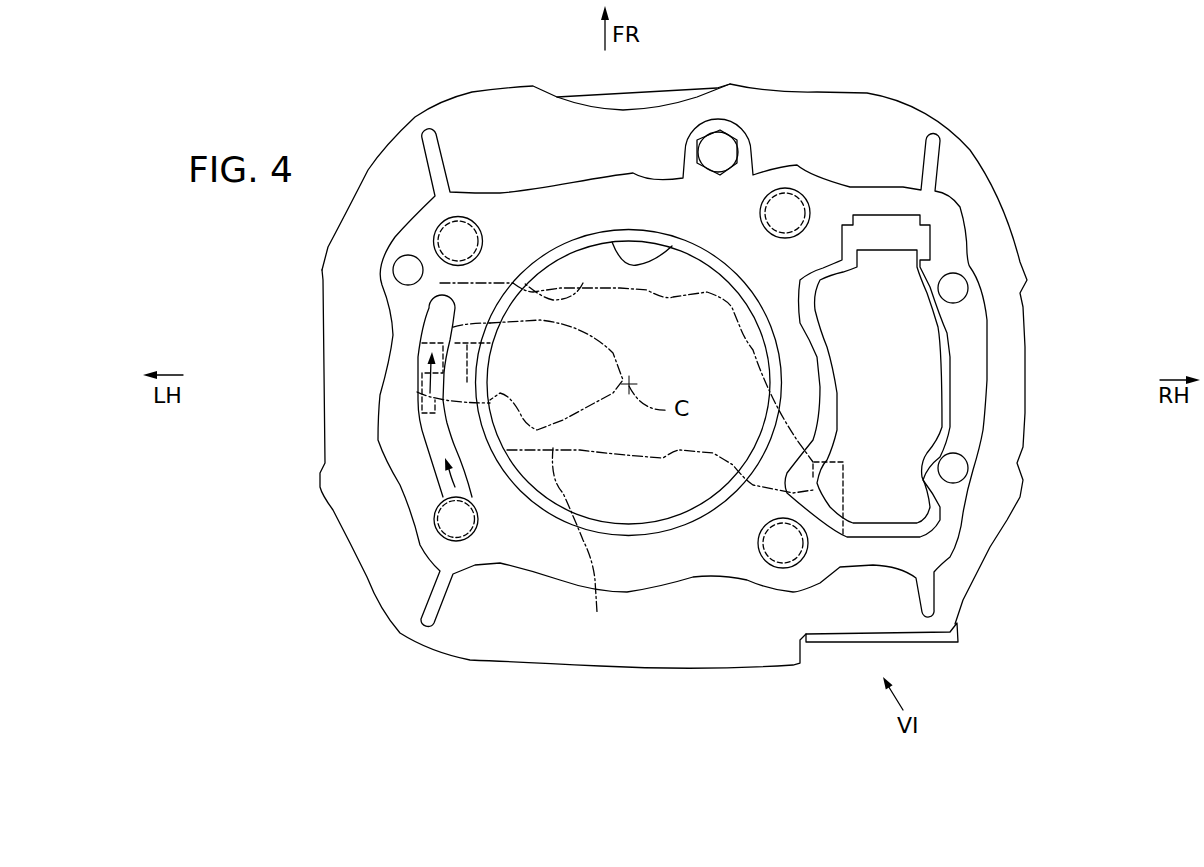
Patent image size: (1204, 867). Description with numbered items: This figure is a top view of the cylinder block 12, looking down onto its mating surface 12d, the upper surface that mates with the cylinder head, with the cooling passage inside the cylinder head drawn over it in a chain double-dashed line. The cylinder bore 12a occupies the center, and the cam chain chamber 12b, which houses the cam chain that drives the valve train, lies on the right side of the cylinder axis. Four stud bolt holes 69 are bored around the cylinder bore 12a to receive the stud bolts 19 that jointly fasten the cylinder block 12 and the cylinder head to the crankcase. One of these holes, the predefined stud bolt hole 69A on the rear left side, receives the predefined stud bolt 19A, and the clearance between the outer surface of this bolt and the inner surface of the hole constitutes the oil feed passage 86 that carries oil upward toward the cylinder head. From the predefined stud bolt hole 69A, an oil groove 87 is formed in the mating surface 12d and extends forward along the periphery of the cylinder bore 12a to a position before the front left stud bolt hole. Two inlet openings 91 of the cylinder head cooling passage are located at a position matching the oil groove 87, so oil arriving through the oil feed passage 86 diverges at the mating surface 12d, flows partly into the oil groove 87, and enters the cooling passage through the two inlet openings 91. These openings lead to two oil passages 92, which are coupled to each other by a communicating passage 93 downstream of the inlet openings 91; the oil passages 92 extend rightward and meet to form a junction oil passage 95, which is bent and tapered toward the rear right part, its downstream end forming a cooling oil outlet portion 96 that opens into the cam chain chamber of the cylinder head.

The cylinder block 12 is at (998, 171).
The cylinder bore 12a is at (645, 250).
The cam chain chamber 12b is at (920, 361).
The mating surface 12d is at (630, 218).
The stud bolt 19 is at (438, 238).
The predefined stud bolt 19A is at (434, 533).
The stud bolt hole 69 is at (462, 232).
The predefined stud bolt hole 69A is at (478, 515).
The oil feed passage 86 is at (427, 528).
The oil groove 87 is at (423, 437).
The inlet opening 91 is at (453, 327).
The oil passage 92 is at (583, 283).
The communicating passage 93 is at (518, 375).
The junction oil passage 95 is at (740, 328).
The cooling oil outlet portion 96 is at (845, 490).